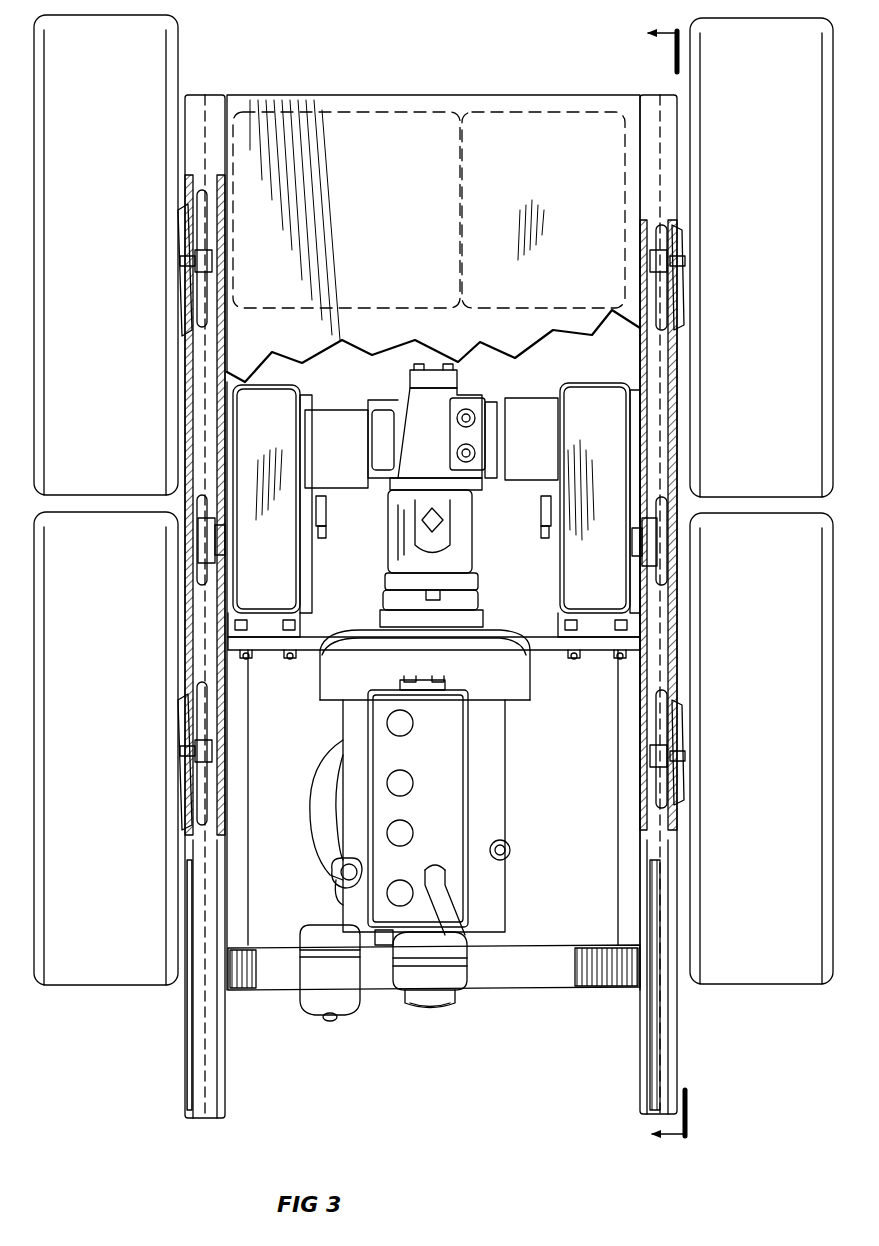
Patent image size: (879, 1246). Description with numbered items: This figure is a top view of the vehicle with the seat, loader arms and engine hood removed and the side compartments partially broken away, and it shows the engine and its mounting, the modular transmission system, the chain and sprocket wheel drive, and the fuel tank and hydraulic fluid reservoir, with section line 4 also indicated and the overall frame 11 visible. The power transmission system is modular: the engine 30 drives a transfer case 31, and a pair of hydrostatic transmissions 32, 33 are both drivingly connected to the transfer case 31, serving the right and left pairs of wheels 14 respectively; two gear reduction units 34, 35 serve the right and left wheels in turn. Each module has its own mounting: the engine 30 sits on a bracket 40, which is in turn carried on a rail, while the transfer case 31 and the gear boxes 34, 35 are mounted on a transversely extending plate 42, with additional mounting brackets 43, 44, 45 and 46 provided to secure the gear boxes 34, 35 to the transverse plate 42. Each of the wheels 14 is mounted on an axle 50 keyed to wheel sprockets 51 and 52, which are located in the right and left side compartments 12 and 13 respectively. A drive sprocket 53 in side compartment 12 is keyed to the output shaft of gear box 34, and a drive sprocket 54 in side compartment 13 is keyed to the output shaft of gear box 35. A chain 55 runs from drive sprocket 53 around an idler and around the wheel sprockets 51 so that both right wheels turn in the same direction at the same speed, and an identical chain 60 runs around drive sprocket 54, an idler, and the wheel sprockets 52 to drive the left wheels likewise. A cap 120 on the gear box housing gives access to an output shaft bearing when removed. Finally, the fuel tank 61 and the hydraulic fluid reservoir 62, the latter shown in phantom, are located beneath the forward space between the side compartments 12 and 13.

The section line 4- 4 is at (641, 592).
The vehicle frame 11 is at (340, 70).
The side compartment 12 is at (657, 106).
The side compartment 13 is at (203, 103).
The wheels 14 is at (433, 500).
The engine 30 is at (326, 892).
The transfer case 31 is at (523, 675).
The hydrostatic transmission 32 is at (463, 531).
The hydrostatic transmission 33 is at (342, 392).
The gear reduction unit 34 is at (595, 498).
The gear reduction unit 35 is at (266, 499).
The bracket 40 is at (570, 972).
The transversely extending plate 42 is at (315, 645).
The mounting bracket 43 is at (632, 597).
The mounting bracket 44 is at (560, 624).
The mounting bracket 45 is at (310, 612).
The mounting bracket 46 is at (230, 597).
The axle 50 is at (195, 262).
The wheel sprockets 51 is at (662, 327).
The wheel sprockets 52 is at (210, 325).
The drive sprocket 53 is at (668, 527).
The drive sprocket 54 is at (200, 558).
The chain 55 is at (665, 627).
The chain 60 is at (190, 633).
The fuel tank 61 is at (389, 110).
The hydraulic fluid reservoir 62 is at (517, 110).
The cap 120 is at (320, 522).